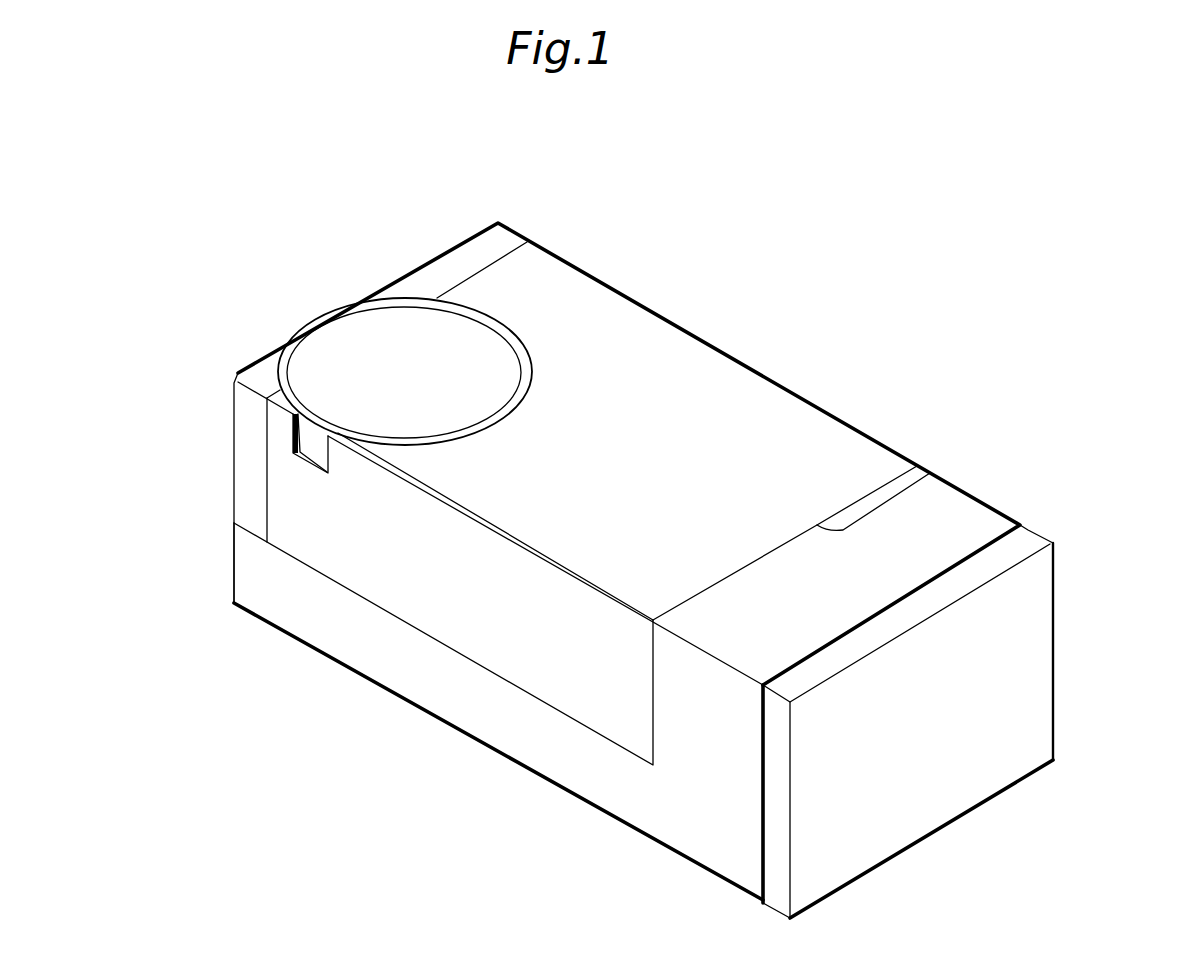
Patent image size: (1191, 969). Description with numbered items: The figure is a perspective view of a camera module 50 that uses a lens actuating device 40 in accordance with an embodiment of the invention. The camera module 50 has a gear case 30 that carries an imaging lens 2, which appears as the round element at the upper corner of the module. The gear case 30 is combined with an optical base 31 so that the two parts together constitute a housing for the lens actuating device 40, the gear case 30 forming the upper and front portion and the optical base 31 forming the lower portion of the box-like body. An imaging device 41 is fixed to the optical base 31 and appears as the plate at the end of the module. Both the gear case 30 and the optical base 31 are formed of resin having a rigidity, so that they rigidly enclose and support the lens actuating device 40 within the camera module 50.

The camera module 50 is at (365, 272).
The imaging lens 2 is at (350, 366).
The gear case 30 is at (447, 578).
The optical base 31 is at (495, 715).
The lens actuating device 40 is at (662, 428).
The imaging device 41 is at (1022, 586).